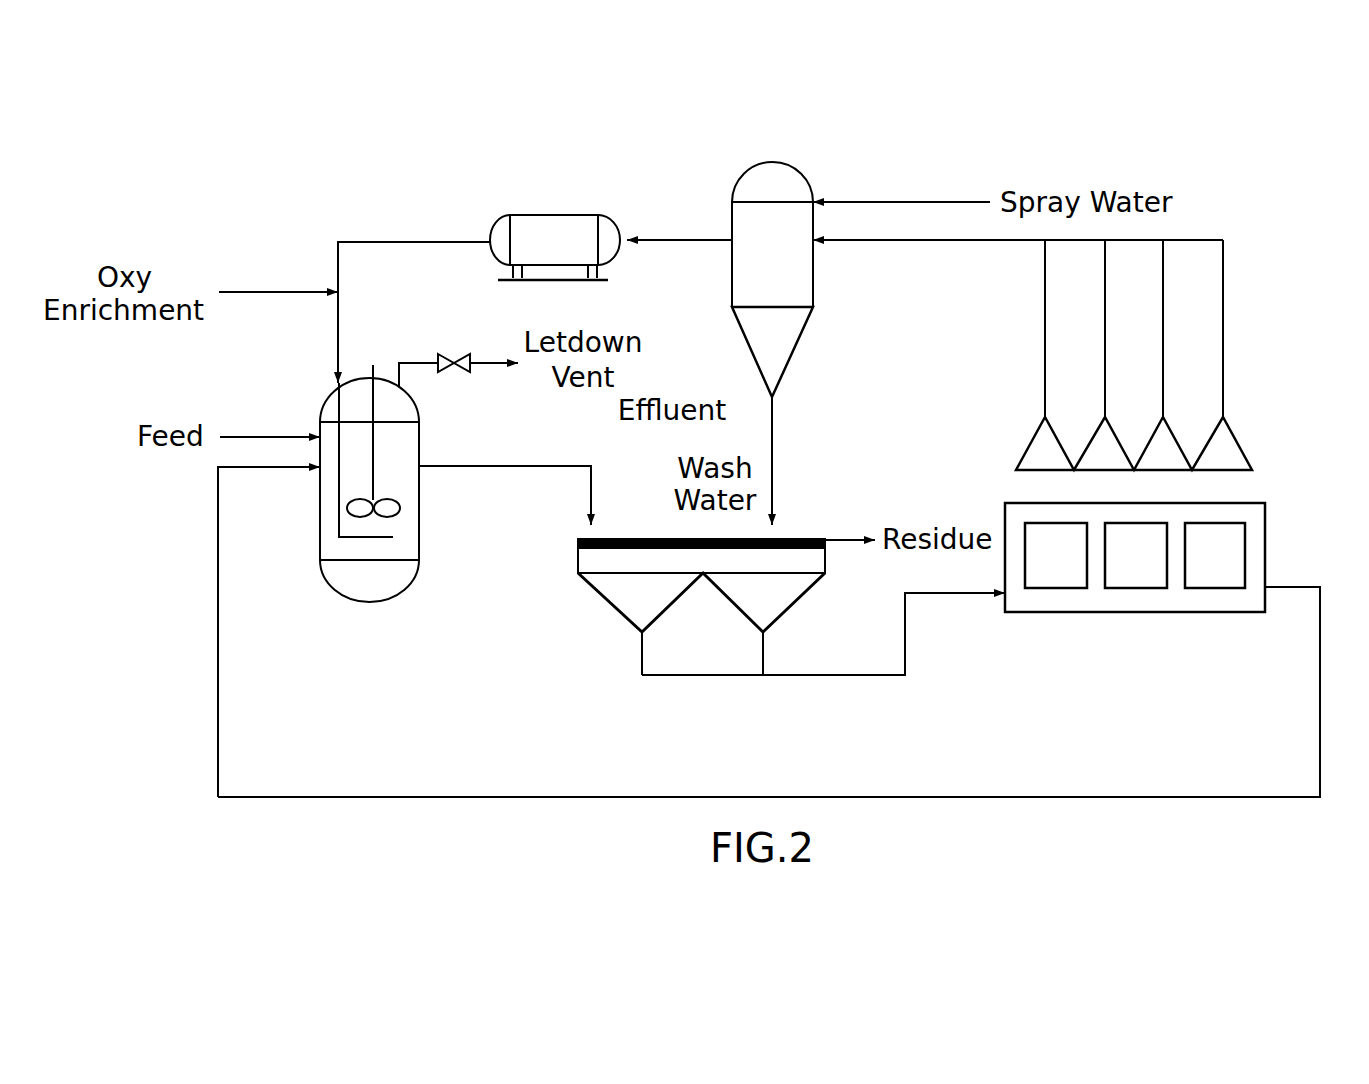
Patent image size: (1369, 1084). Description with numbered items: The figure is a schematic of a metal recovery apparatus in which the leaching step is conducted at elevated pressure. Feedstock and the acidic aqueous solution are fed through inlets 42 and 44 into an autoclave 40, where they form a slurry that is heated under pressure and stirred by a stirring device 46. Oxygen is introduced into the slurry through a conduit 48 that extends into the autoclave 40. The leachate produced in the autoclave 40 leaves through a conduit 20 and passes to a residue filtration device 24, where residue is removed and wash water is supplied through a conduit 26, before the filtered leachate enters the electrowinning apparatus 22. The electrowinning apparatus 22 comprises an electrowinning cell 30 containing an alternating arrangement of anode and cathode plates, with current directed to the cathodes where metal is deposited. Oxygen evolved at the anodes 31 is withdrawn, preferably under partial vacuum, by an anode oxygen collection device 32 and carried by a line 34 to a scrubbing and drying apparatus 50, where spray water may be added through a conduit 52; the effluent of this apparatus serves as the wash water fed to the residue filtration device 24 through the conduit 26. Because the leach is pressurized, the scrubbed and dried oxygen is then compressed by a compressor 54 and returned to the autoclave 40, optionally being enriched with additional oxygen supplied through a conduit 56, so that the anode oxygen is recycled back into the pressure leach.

The conduit 20 is at (522, 462).
The electrowinning apparatus 22 is at (1265, 560).
The residue filtration device 24 is at (598, 593).
The conduit 26 is at (772, 468).
The electrowinning cell 30 is at (1238, 508).
The anodes 31 is at (1072, 580).
The anode oxygen collection device 32 is at (1225, 313).
The gas line 34 is at (893, 240).
The autoclave 40 is at (422, 547).
The inlet 42 is at (270, 432).
The inlet 44 is at (278, 472).
The stirring device 46 is at (373, 457).
The conduit 48 is at (340, 522).
The scrubbing and drying apparatus 50 is at (785, 162).
The conduit 52 is at (887, 202).
The compressor 54 is at (570, 213).
The conduit 56 is at (295, 290).